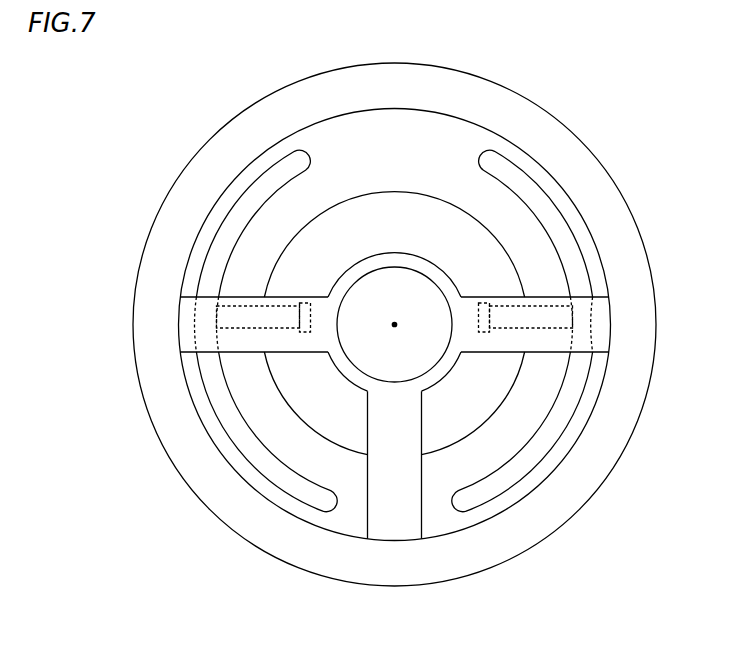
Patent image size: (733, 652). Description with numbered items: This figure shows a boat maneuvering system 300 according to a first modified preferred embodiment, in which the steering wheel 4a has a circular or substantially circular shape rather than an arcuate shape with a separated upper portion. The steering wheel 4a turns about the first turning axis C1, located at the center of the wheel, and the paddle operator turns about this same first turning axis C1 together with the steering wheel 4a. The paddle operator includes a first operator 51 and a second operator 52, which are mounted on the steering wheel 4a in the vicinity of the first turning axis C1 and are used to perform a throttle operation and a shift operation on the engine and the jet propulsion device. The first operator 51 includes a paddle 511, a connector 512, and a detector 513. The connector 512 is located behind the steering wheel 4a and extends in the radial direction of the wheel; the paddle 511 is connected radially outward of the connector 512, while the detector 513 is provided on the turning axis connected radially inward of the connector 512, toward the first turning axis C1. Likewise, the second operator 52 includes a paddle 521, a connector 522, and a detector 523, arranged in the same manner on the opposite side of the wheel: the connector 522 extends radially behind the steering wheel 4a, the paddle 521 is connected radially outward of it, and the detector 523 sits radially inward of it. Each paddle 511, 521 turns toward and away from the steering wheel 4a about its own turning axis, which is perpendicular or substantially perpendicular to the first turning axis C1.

The boat maneuvering system 300 is at (595, 79).
The steering wheel 4a is at (595, 166).
The first turning axis C1 is at (395, 322).
The second operator 52 is at (242, 213).
The paddle 521 is at (212, 387).
The connector 522 is at (217, 307).
The detector 523 is at (303, 333).
The first operator 51 is at (548, 433).
The paddle 511 is at (565, 248).
The connector 512 is at (491, 322).
The detector 513 is at (543, 313).